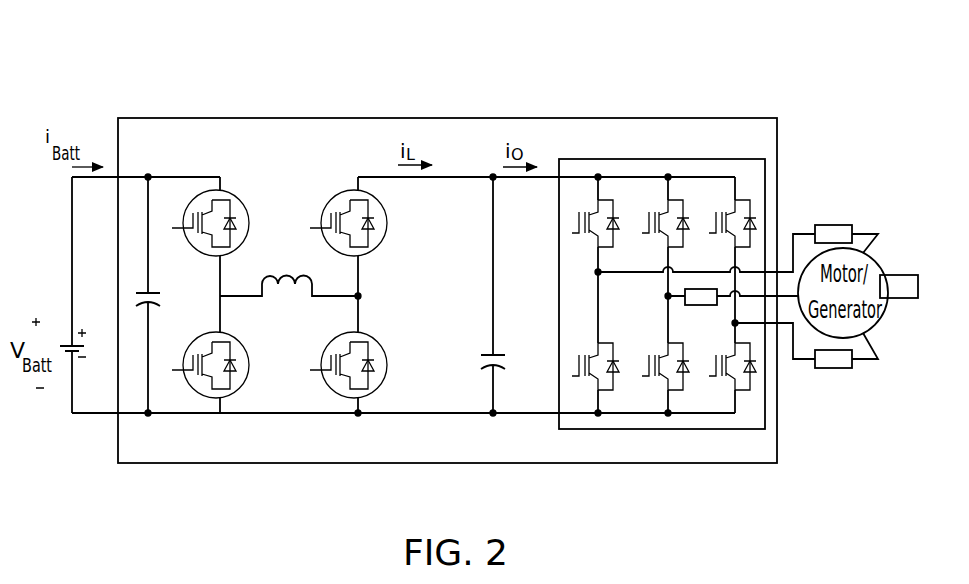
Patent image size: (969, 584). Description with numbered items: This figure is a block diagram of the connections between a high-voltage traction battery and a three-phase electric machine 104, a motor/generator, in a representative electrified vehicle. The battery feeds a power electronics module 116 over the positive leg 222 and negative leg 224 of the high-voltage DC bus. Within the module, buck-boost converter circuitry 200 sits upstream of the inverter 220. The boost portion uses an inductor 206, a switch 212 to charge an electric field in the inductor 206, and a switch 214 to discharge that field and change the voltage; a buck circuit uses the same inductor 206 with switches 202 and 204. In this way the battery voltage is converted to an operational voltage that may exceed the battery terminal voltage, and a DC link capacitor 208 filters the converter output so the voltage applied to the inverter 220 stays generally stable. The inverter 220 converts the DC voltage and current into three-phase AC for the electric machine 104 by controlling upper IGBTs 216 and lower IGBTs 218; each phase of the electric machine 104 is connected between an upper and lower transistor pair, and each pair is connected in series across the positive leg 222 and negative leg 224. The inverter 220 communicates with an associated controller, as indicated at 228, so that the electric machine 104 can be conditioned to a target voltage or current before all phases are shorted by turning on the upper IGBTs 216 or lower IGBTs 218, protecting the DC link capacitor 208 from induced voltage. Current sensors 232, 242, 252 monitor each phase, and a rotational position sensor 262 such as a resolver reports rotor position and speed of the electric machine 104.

The buck-boost converter circuitry 200 is at (192, 110).
The electric machine 104 is at (70, 343).
The switch 212 is at (237, 197).
The switch 214 is at (242, 384).
The inductor 206 is at (292, 282).
The switch 204 is at (392, 223).
The switch 202 is at (388, 377).
The DC link capacitor 208 is at (490, 353).
The positive leg 222 is at (472, 176).
The negative leg 224 is at (450, 414).
The power electronics module 116 is at (592, 118).
The communication with associated controller 228 is at (640, 152).
The inverter 220 is at (681, 158).
The upper IGBTs 216 is at (750, 190).
The lower IGBTs 218 is at (572, 396).
The current sensor 232 is at (833, 224).
The current sensor 242 is at (688, 306).
The current sensor 252 is at (835, 370).
The rotational position sensor 262 is at (900, 274).